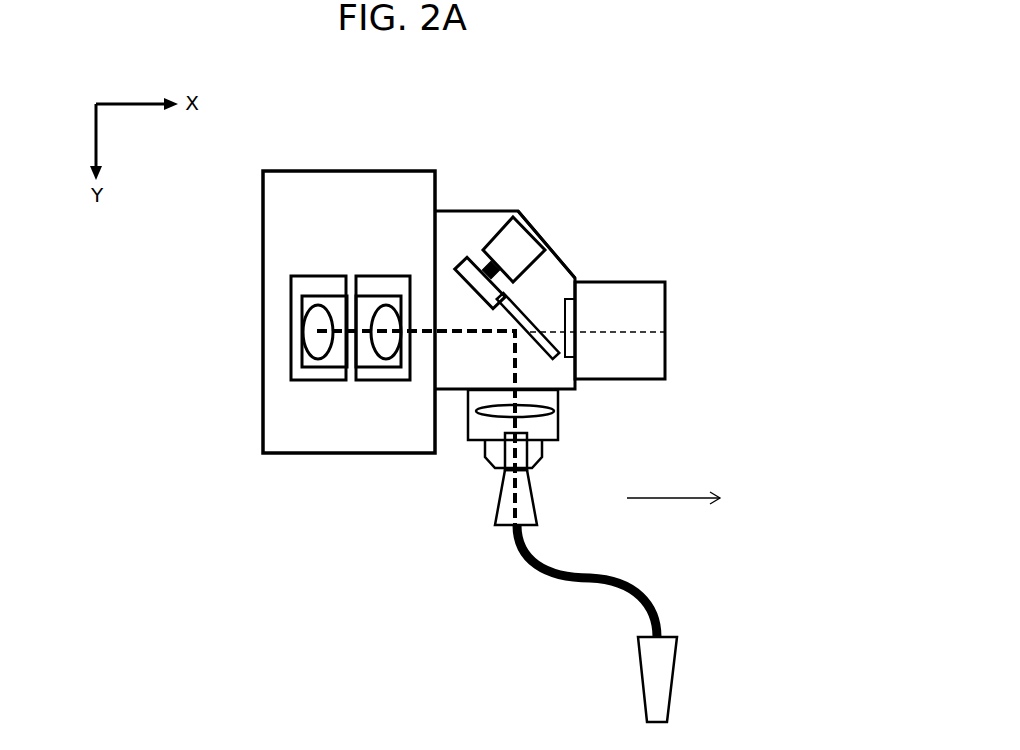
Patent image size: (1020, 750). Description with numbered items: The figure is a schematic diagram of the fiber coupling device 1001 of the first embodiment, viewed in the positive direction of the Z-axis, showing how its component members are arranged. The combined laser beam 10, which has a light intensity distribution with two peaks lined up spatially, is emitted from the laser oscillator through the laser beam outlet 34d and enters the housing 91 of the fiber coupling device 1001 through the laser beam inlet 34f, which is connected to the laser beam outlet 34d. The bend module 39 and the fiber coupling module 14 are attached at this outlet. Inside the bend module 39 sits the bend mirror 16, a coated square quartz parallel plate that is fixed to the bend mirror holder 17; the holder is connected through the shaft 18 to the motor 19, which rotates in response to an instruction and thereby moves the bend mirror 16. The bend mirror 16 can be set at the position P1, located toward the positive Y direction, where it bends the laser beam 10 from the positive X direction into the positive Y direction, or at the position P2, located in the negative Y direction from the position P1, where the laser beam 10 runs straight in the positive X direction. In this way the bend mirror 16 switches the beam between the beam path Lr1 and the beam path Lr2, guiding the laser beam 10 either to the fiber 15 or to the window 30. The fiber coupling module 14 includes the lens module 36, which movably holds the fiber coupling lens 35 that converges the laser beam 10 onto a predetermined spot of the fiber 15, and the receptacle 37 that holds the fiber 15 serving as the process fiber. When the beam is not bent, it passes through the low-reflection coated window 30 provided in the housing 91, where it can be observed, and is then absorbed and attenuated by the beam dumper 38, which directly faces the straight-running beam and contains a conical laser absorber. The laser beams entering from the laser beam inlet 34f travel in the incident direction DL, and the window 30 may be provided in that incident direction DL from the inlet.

The laser beam 10 is at (431, 340).
The fiber coupling module 14 is at (473, 516).
The fiber 15 is at (537, 568).
The bend mirror 16 is at (570, 313).
The bend mirror holder 17 is at (461, 262).
The shaft 18 is at (485, 263).
The motor 19 is at (513, 247).
The window 30 is at (533, 325).
The laser beam outlet 34d is at (412, 372).
The laser beam inlet 34f is at (438, 327).
The fiber coupling lens 35 is at (482, 411).
The lens module 36 is at (462, 395).
The receptacle 37 is at (505, 435).
The beam dumper 38 is at (648, 298).
The bend module 39 is at (505, 264).
The housing 91 is at (528, 226).
The fiber coupling device 1001 is at (558, 237).
The position P1 is at (556, 356).
The position P2 is at (519, 310).
The beam path Lr1 is at (512, 355).
The beam path Lr2 is at (622, 332).
The incident direction DL is at (673, 489).